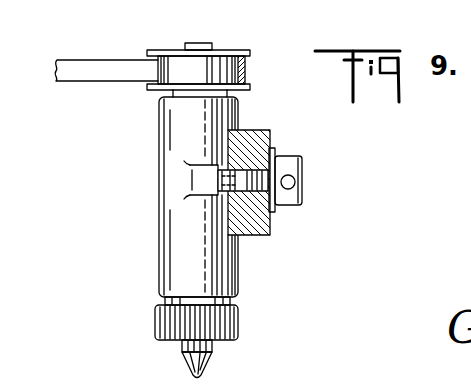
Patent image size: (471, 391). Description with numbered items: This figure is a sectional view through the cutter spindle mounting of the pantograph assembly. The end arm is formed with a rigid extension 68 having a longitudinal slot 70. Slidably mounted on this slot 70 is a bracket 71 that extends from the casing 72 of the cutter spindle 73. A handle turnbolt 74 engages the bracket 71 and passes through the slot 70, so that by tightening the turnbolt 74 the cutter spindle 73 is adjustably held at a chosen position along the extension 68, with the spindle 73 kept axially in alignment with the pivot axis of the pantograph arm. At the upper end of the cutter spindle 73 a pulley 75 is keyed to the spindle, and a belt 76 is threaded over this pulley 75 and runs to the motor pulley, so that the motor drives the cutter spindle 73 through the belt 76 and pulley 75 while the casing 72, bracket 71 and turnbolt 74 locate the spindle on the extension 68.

The extension 68 is at (250, 143).
The longitudinal slot 70 is at (247, 198).
The bracket 71 is at (197, 177).
The casing 72 is at (177, 260).
The cutter spindle 73 is at (198, 47).
The handle turnbolt 74 is at (290, 202).
The pulley 75 is at (212, 68).
The belt 76 is at (67, 65).